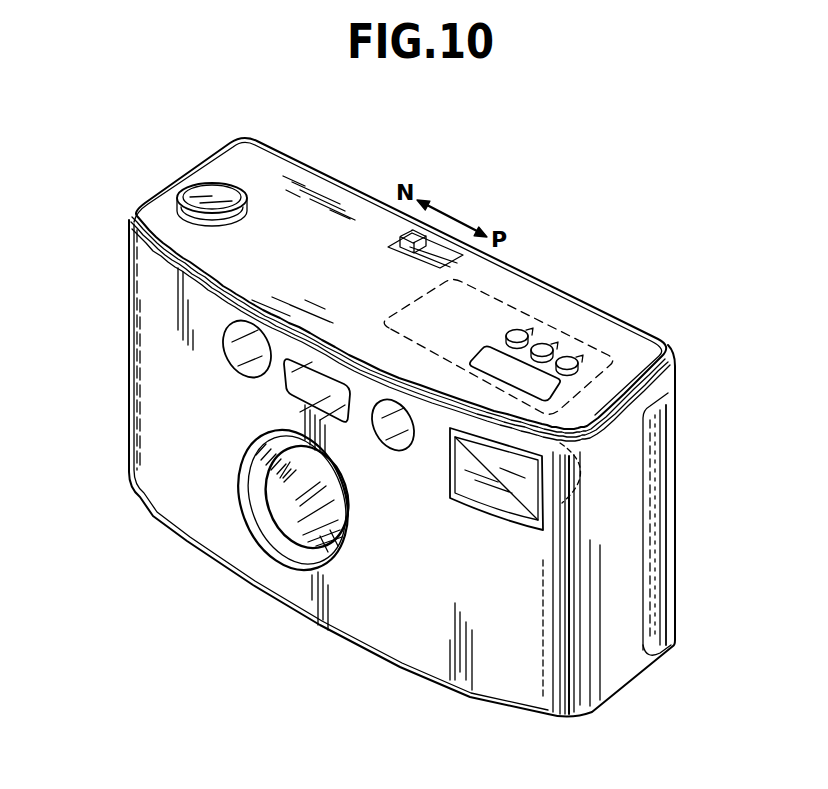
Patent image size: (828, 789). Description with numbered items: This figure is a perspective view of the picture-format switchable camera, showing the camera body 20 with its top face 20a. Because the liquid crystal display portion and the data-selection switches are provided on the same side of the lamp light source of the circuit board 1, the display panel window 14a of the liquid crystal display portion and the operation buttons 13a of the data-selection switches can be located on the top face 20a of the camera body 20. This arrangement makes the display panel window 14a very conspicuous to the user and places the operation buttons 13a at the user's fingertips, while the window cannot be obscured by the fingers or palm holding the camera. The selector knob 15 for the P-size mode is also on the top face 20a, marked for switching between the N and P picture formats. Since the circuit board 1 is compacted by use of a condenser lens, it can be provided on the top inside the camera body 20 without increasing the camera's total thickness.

The camera body 20 is at (237, 560).
The top face 20a is at (348, 250).
The selector knob 15 is at (403, 250).
The display panel window 14a is at (518, 329).
The circuit board 1 is at (513, 300).
The operation buttons 13a is at (568, 356).